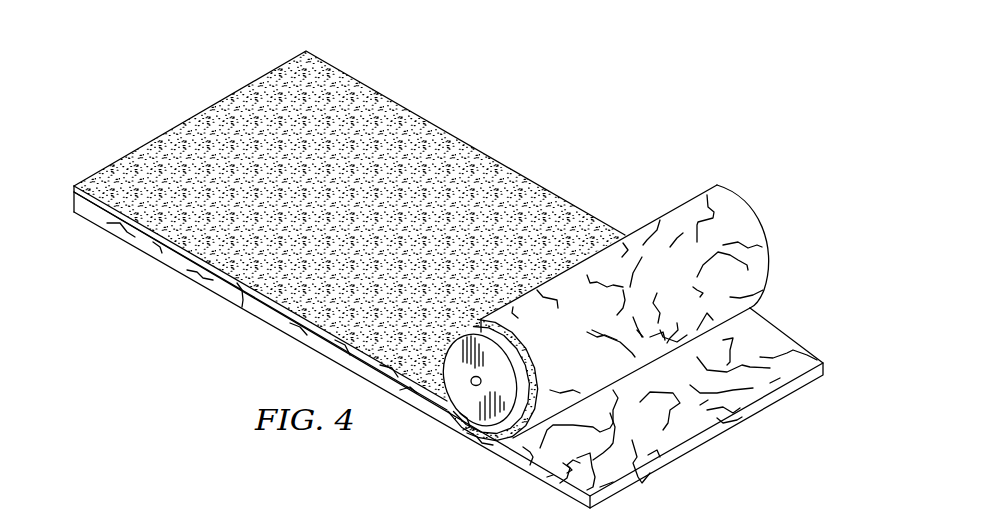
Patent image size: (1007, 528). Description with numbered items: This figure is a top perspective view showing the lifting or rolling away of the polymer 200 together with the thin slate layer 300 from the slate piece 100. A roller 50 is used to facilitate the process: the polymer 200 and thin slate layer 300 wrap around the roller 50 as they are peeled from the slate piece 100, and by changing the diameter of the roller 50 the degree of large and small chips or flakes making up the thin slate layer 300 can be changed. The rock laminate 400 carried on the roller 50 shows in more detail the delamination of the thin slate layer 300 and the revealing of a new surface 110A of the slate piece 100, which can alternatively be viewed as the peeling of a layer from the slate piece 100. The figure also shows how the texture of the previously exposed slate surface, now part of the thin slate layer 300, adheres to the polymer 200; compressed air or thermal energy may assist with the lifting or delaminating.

The roller 50 is at (475, 410).
The slate piece 100 is at (178, 263).
The new surface 110A is at (685, 450).
The polymer 200 is at (226, 118).
The thin slate layer 300 is at (497, 322).
The rock laminate 400 is at (482, 320).